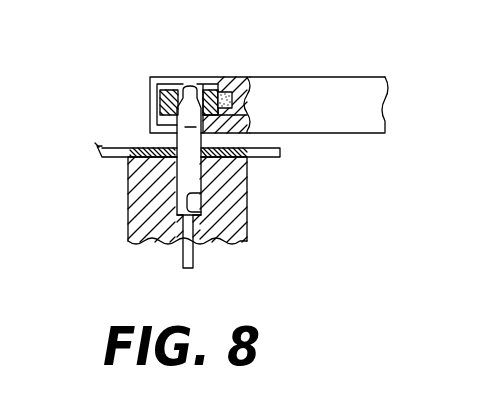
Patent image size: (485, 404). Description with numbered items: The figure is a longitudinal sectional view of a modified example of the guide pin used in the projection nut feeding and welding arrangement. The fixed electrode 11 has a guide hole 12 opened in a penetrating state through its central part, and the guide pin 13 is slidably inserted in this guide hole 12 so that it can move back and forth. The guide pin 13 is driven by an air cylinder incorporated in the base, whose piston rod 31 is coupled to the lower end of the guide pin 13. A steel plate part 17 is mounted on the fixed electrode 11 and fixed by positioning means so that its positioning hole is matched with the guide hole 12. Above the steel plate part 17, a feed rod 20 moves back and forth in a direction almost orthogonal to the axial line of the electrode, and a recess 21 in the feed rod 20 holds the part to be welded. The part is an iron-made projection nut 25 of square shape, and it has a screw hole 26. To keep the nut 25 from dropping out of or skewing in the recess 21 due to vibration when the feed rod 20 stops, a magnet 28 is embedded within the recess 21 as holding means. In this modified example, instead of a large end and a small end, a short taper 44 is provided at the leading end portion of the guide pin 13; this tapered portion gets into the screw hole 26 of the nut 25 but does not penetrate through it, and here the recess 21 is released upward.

The fixed electrode 11 is at (250, 232).
The guide hole 12 is at (205, 206).
The guide pin 13 is at (166, 211).
The steel plate part 17 is at (112, 158).
The feed rod 20 is at (350, 134).
The recess 21 is at (150, 92).
The projection nut 25 is at (206, 84).
The screw hole 26 is at (190, 84).
The magnet 28 is at (250, 100).
The piston rod 31 is at (196, 258).
The short taper 44 is at (157, 102).